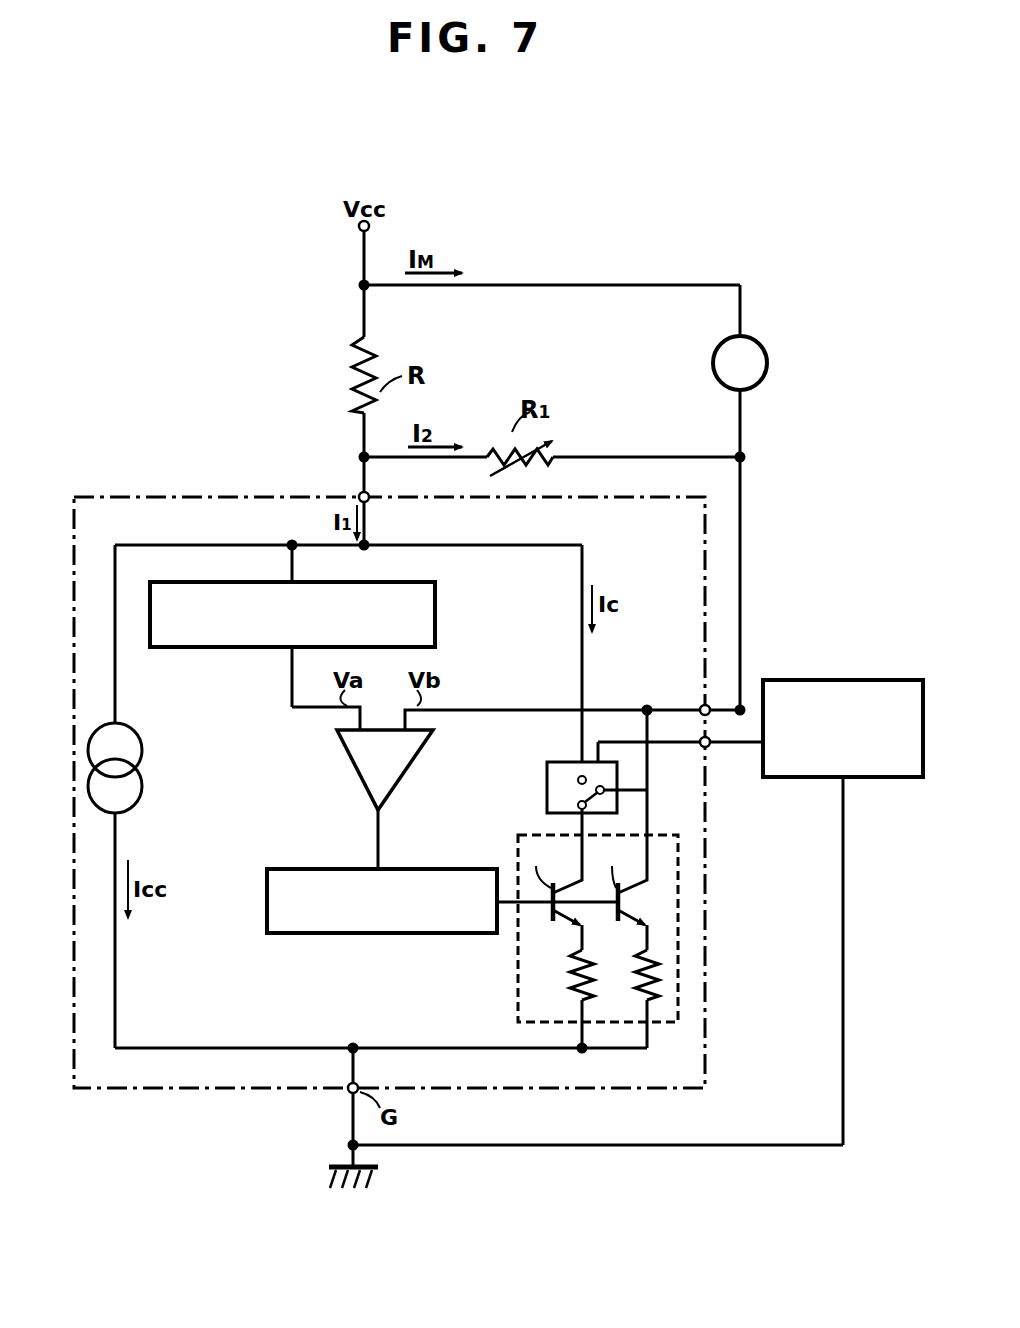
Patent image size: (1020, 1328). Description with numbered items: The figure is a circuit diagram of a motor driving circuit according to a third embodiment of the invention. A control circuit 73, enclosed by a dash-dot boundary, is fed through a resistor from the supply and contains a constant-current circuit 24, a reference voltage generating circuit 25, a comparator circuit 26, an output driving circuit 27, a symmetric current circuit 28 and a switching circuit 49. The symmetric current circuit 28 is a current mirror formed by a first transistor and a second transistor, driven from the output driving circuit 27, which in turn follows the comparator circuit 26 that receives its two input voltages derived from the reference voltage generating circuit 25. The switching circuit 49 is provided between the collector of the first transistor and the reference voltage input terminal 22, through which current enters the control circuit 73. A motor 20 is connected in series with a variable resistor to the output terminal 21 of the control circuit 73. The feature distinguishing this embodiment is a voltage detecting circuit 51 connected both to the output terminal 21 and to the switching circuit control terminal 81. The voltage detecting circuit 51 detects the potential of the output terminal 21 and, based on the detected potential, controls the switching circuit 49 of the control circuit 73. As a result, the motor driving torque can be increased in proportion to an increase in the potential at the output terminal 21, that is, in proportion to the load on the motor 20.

The motor 20 is at (757, 385).
The output terminal 21 is at (700, 706).
The reference voltage input terminal 22 is at (359, 492).
The constant-current circuit 24 is at (143, 788).
The reference voltage generating circuit 25 is at (222, 649).
The comparator circuit 26 is at (353, 778).
The output driving circuit 27 is at (320, 935).
The symmetric current circuit 28 is at (518, 967).
The switching circuit 49 is at (546, 792).
The voltage detecting circuit 51 is at (826, 680).
The control circuit 73 is at (705, 962).
The switching circuit control terminal 81 is at (710, 748).